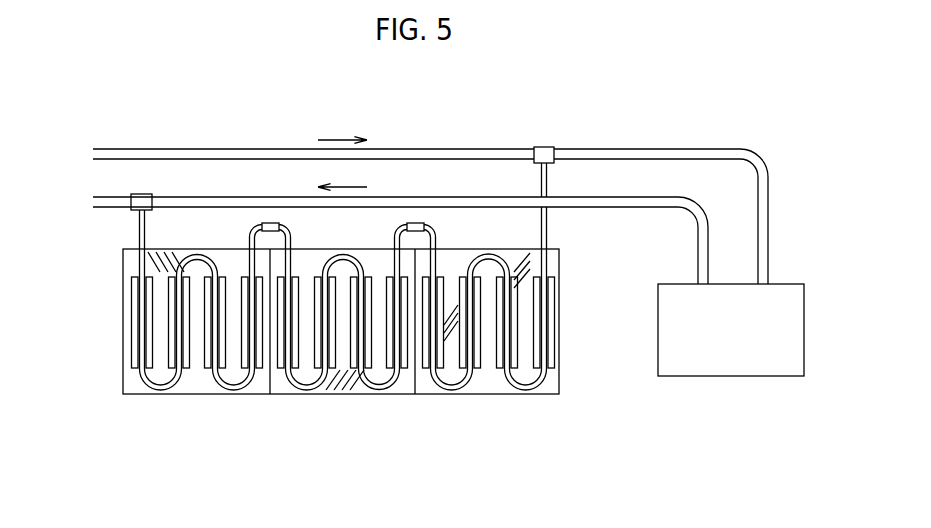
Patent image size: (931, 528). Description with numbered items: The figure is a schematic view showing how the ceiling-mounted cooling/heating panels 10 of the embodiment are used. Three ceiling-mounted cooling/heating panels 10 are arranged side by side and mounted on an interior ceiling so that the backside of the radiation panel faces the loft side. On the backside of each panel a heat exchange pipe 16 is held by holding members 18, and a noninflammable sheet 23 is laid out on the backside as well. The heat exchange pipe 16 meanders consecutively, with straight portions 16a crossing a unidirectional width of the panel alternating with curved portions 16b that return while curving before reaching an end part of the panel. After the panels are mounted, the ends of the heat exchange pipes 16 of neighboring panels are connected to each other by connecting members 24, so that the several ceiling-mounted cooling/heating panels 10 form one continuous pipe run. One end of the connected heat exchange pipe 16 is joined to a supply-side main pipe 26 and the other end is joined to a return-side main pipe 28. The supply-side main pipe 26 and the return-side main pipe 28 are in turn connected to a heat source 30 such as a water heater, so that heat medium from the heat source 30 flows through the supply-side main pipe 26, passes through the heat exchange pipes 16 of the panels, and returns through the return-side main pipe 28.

The ceiling-mounted cooling/heating panel 10 is at (200, 407).
The heat exchange pipe 16 is at (301, 310).
The straight portion 16a is at (138, 302).
The curved portion 16b is at (157, 392).
The holding member 18 is at (118, 342).
The noninflammable sheet 23 is at (428, 388).
The connecting member 24 is at (273, 223).
The supply-side main pipe 26 is at (200, 197).
The return-side main pipe 28 is at (506, 149).
The heat source 30 is at (725, 363).